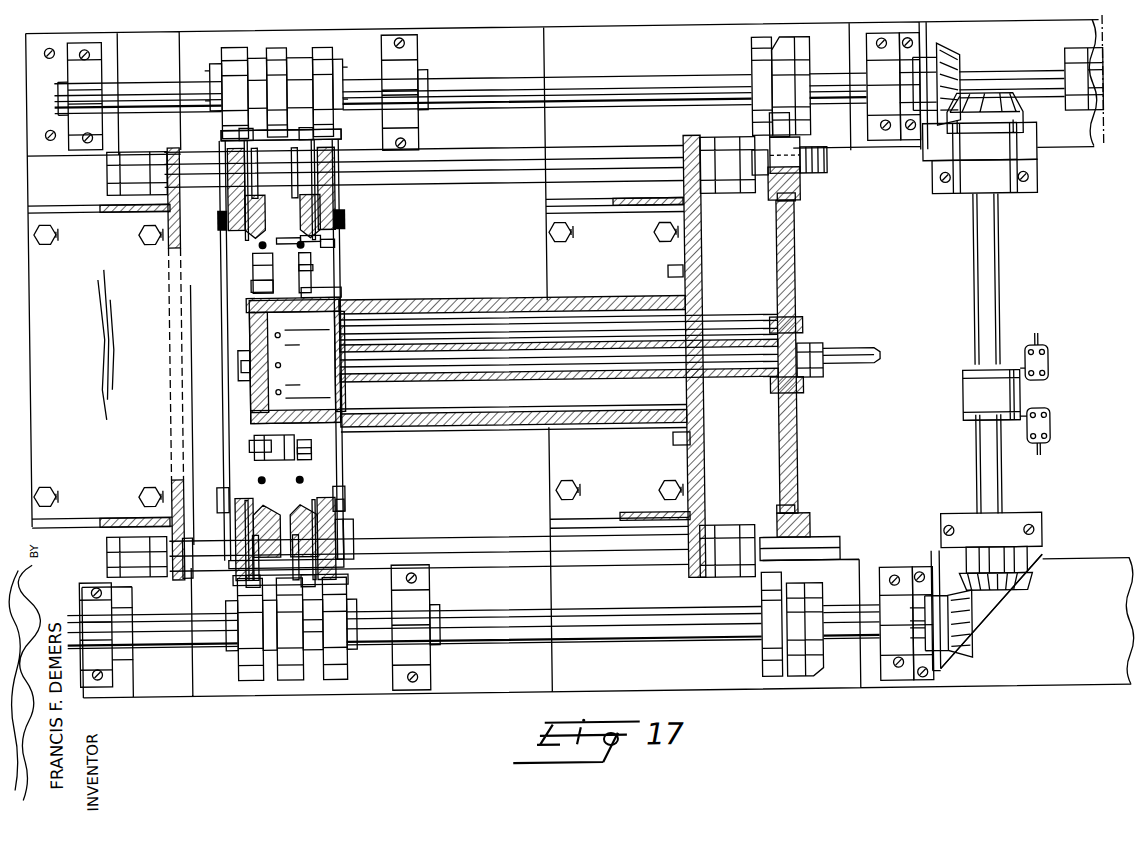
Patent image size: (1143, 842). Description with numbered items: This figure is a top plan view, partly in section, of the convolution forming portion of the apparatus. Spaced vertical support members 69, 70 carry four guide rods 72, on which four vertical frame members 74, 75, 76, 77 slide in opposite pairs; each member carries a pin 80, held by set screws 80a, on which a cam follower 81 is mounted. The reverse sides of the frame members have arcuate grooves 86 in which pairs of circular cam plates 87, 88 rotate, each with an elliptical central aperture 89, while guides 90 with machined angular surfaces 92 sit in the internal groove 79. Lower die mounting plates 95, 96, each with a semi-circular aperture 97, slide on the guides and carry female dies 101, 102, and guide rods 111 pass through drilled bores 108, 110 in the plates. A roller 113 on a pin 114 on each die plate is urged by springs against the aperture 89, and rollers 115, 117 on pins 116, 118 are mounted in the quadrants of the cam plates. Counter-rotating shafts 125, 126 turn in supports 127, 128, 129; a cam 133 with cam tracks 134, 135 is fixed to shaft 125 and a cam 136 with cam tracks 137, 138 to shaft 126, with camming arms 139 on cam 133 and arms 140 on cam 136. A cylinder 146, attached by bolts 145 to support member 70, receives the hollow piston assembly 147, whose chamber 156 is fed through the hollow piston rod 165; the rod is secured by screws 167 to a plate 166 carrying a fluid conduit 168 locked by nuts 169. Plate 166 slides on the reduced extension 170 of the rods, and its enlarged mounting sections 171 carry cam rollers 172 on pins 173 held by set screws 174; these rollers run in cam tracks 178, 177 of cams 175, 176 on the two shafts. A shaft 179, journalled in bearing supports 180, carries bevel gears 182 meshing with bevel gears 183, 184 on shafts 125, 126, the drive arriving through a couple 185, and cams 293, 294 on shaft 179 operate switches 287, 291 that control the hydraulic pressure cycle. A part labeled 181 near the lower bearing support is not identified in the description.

The vertical support member 69 is at (168, 244).
The vertical support member 70 is at (700, 240).
The guide rod 72 is at (476, 148).
The vertical frame member 74 is at (236, 568).
The vertical frame member 75 is at (339, 540).
The vertical frame member 76 is at (222, 140).
The vertical frame member 77 is at (326, 236).
The internal groove 79 is at (316, 222).
The pin 80 is at (228, 222).
The set screw 80a is at (334, 168).
The cam follower 81 is at (334, 136).
The arcuate groove 86 is at (298, 160).
The circular cam plate 87 is at (217, 218).
The circular cam plate 88 is at (345, 210).
The elliptical central aperture 89 is at (340, 300).
The guide 90 is at (218, 500).
The machined angular surface 92 is at (310, 481).
The lower die mounting plate 95 is at (252, 264).
The lower die mounting plate 96 is at (310, 253).
The semi-circular aperture 97 is at (248, 312).
The female die 101 is at (264, 446).
The female die 102 is at (320, 296).
The drilled bore 108 is at (250, 282).
The drilled bore 110 is at (314, 264).
The guide rod 111 is at (258, 245).
The roller 113 is at (238, 352).
The pin 114 is at (240, 380).
The roller 115 is at (320, 238).
The pin 116 is at (334, 243).
The roller 117 is at (344, 506).
The pin 118 is at (344, 496).
The shaft 125 is at (586, 75).
The shaft 126 is at (503, 643).
The support 127 is at (104, 70).
The support 128 is at (420, 62).
The support 129 is at (906, 48).
The cam 133 is at (352, 46).
The cam track 134 is at (295, 54).
The cam track 135 is at (246, 54).
The cam 136 is at (349, 673).
The cam track 137 is at (296, 682).
The cam track 138 is at (258, 682).
The camming arm 139 is at (340, 175).
The arm 140 is at (158, 548).
The bolt 145 is at (668, 272).
The cylinder 146 is at (472, 287).
The hollow piston assembly 147 is at (370, 313).
The chamber 156 is at (322, 361).
The hollow piston rod 165 is at (516, 342).
The plate 166 is at (795, 264).
The screw 167 is at (792, 317).
The fluid conduit 168 is at (860, 348).
The nut 169 is at (810, 343).
The reduced extension 170 is at (800, 186).
The enlarged mounting section 171 is at (795, 202).
The cam roller 172 is at (768, 148).
The pin 173 is at (800, 172).
The set screw 174 is at (824, 161).
The cam 175 is at (752, 46).
The cam 176 is at (756, 592).
The cam track 177 is at (788, 48).
The cam track 178 is at (792, 682).
The shaft 179 is at (1000, 280).
The bearing support 180 is at (1040, 180).
The housing edge 181 is at (999, 623).
The bevel gear 182 is at (1017, 116).
The bevel gear 183 is at (958, 58).
The bevel gear 184 is at (976, 652).
The couple 185 is at (1070, 55).
The switch 287 is at (1048, 362).
The switch 291 is at (1050, 418).
The cam 293 is at (962, 372).
The cam 294 is at (964, 420).